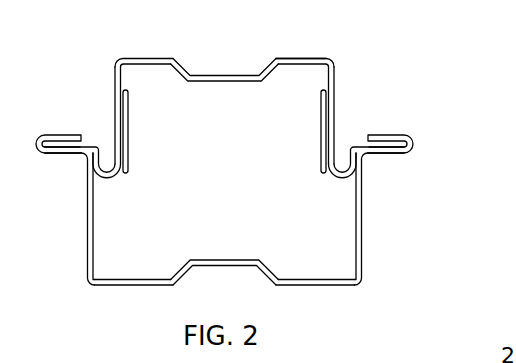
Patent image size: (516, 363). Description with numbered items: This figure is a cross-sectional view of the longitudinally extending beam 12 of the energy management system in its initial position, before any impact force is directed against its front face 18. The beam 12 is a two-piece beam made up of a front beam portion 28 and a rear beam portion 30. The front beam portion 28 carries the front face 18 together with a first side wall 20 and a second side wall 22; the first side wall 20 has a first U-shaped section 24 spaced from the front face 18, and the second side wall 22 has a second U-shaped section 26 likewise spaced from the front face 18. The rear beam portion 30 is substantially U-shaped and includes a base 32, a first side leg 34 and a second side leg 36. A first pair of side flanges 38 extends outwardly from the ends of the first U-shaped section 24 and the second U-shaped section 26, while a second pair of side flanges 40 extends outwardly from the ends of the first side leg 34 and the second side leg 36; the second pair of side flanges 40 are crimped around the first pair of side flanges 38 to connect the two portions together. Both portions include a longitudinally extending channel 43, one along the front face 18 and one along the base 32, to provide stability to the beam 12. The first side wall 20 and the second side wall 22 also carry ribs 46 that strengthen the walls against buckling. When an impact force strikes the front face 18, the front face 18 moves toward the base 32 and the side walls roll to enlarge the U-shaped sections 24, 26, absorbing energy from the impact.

The longitudinally extending beam 12 is at (239, 183).
The front face 18 is at (228, 73).
The first side wall 20 is at (113, 93).
The second side wall 22 is at (334, 80).
The first U-shaped section 24 is at (106, 181).
The second U-shaped section 26 is at (344, 181).
The front beam portion 28 is at (301, 56).
The rear beam portion 30 is at (230, 226).
The base 32 is at (318, 286).
The first side leg 34 is at (88, 233).
The second side leg 36 is at (362, 212).
The first pair of side flanges 38 is at (93, 137).
The second pair of side flanges 40 is at (67, 156).
The longitudinally extending channel 43 is at (213, 87).
The ribs 46 is at (130, 110).